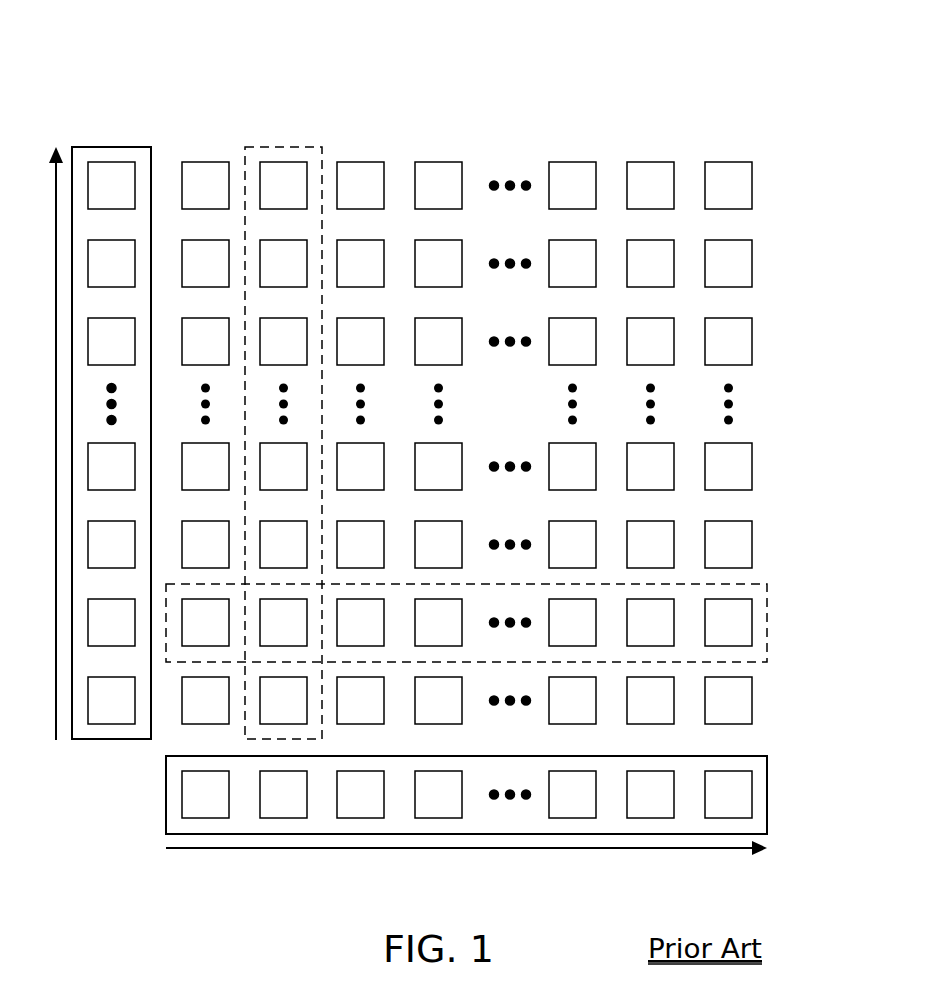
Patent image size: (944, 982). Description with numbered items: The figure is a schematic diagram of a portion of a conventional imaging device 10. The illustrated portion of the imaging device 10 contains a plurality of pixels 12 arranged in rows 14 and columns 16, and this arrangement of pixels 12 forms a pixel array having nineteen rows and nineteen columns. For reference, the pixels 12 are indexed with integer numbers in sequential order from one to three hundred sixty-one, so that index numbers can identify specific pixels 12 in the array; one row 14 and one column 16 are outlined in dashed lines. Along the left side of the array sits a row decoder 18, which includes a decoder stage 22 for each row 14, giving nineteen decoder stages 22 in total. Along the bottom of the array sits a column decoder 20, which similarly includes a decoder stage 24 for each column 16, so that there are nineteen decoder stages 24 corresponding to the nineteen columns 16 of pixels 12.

The imaging device 10 is at (195, 48).
The pixels 12 is at (752, 162).
The rows 14 is at (767, 601).
The columns 16 is at (300, 147).
The row decoder 18 is at (135, 147).
The column decoder 20 is at (767, 770).
The decoder stage 22 is at (104, 724).
The decoder stage 24 is at (182, 803).